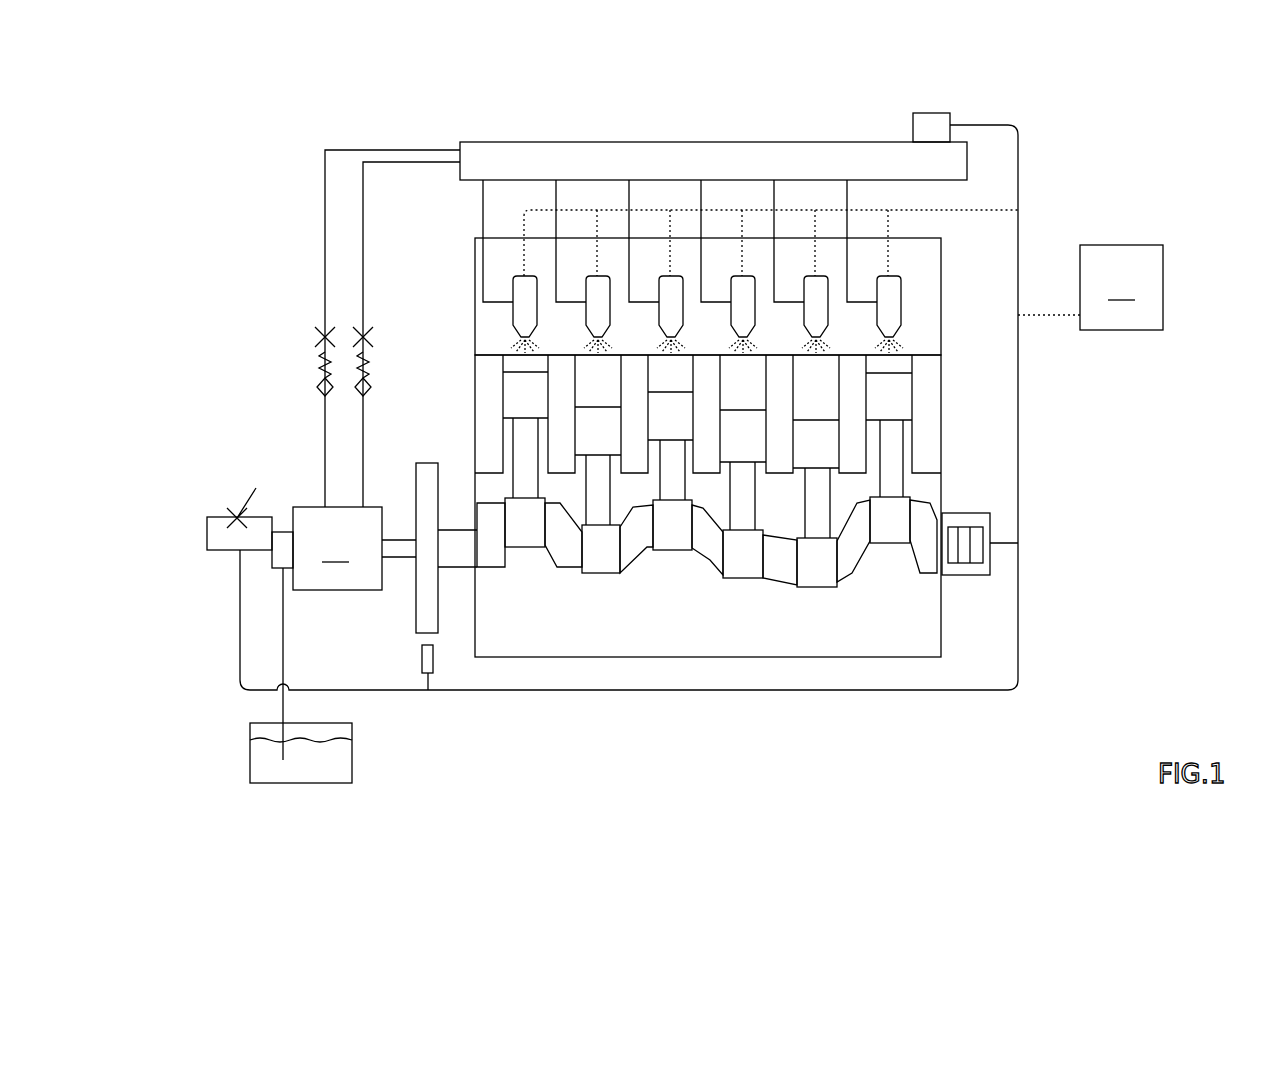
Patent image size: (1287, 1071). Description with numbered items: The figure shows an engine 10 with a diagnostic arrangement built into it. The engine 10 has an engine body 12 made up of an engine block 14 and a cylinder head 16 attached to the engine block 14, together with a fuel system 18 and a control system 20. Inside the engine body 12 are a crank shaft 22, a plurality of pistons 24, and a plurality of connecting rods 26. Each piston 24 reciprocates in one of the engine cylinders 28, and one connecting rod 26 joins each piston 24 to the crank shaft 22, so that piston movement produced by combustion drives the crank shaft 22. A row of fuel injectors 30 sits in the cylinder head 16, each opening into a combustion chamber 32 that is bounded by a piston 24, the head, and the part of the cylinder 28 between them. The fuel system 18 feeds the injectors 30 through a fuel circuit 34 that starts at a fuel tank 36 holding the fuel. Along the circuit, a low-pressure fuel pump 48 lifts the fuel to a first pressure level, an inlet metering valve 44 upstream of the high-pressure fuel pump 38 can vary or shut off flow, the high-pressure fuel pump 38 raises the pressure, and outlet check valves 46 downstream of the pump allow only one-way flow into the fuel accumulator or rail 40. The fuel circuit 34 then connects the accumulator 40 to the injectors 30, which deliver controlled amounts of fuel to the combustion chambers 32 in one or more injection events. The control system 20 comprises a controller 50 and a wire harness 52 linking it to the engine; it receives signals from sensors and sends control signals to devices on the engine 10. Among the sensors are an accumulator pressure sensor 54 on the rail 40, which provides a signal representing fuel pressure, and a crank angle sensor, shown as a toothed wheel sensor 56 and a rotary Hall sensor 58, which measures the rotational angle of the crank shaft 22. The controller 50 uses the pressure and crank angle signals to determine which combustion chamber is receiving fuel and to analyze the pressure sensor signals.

The engine 10 is at (255, 147).
The engine body 12 is at (1038, 668).
The engine block 14 is at (942, 460).
The cylinder head 16 is at (942, 308).
The fuel system 18 is at (262, 445).
The control system 20 is at (1155, 228).
The crank shaft 22 is at (777, 573).
The pistons 24 is at (740, 435).
The connecting rods 26 is at (895, 447).
The engine cylinders 28 is at (508, 398).
The fuel injectors 30 is at (523, 287).
The combustion chamber 32 is at (593, 385).
The fuel circuit 34 is at (325, 236).
The fuel tank 36 is at (250, 725).
The high-pressure fuel pump 38 is at (337, 548).
The fuel accumulator or rail 40 is at (510, 142).
The inlet metering valve 44 is at (237, 510).
The outlet check valves 46 is at (318, 378).
The low-pressure fuel pump 48 is at (272, 565).
The controller 50 is at (1121, 287).
The wire harness 52 is at (1055, 315).
The accumulator pressure sensor 54 is at (913, 120).
The toothed wheel sensor 56 is at (422, 660).
The rotary Hall sensor 58 is at (990, 563).